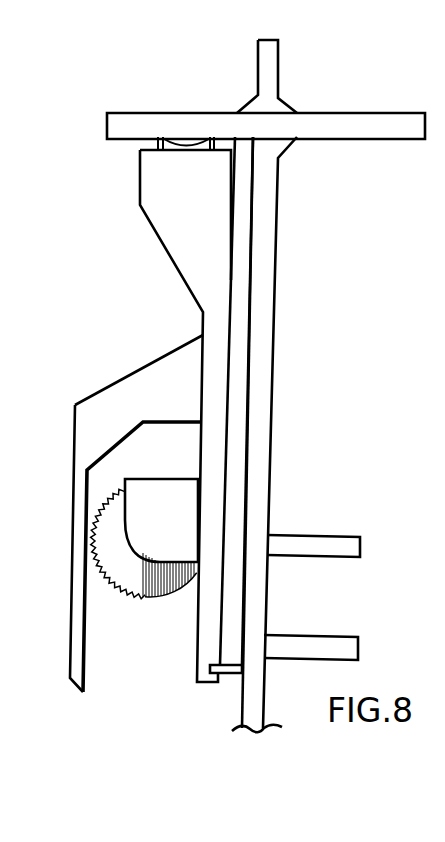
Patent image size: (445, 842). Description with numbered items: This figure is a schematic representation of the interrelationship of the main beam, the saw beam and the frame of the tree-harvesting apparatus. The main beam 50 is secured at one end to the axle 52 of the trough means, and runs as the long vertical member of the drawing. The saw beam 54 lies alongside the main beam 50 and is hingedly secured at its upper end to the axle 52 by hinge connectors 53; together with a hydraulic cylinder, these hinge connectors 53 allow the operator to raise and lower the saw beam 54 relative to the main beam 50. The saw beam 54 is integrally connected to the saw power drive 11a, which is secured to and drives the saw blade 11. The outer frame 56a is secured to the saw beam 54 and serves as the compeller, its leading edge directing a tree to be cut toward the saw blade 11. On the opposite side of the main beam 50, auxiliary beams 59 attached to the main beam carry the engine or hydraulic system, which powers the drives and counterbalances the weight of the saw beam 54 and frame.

The main beam 50 is at (275, 243).
The axle 52 is at (366, 114).
The hinge connectors 53 is at (203, 140).
The saw beam 54 is at (197, 640).
The outer frame 56a is at (98, 392).
The saw blade 11 is at (143, 597).
The saw power drive 11a is at (178, 523).
The auxiliary beams 59 is at (340, 557).